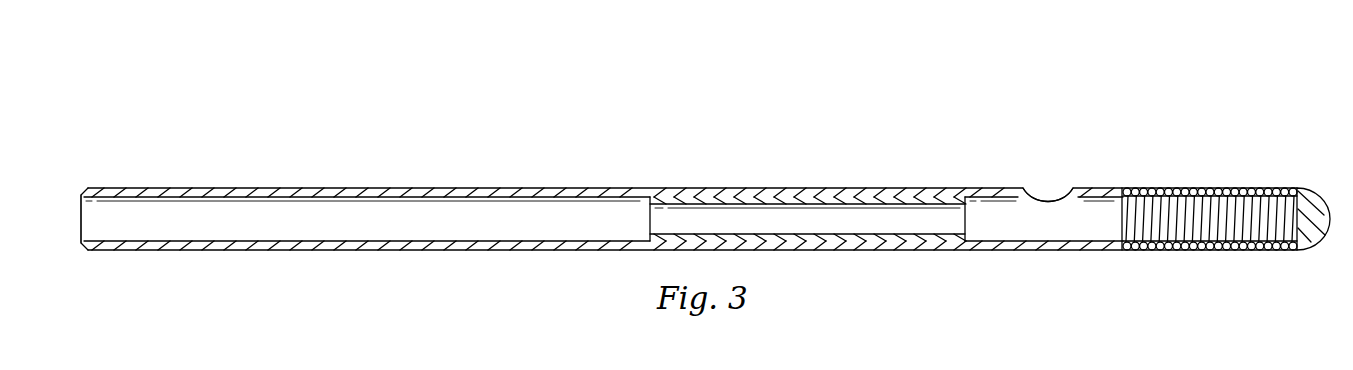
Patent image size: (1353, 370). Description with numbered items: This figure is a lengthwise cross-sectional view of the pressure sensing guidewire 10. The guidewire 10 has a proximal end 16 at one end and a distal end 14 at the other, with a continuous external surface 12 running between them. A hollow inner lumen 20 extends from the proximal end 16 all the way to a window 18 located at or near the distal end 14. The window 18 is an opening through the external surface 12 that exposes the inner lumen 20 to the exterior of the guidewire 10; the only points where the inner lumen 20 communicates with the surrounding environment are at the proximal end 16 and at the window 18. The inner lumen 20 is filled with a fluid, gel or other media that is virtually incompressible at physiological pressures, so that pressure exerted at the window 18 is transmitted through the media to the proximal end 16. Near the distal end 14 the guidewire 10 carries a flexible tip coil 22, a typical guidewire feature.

The pressure sensing guidewire 10 is at (518, 75).
The external surface 12 is at (409, 187).
The distal end 14 is at (1313, 183).
The proximal end 16 is at (95, 173).
The window 18 is at (1052, 192).
The inner lumen 20 is at (252, 215).
The flexible tip coil 22 is at (1211, 190).